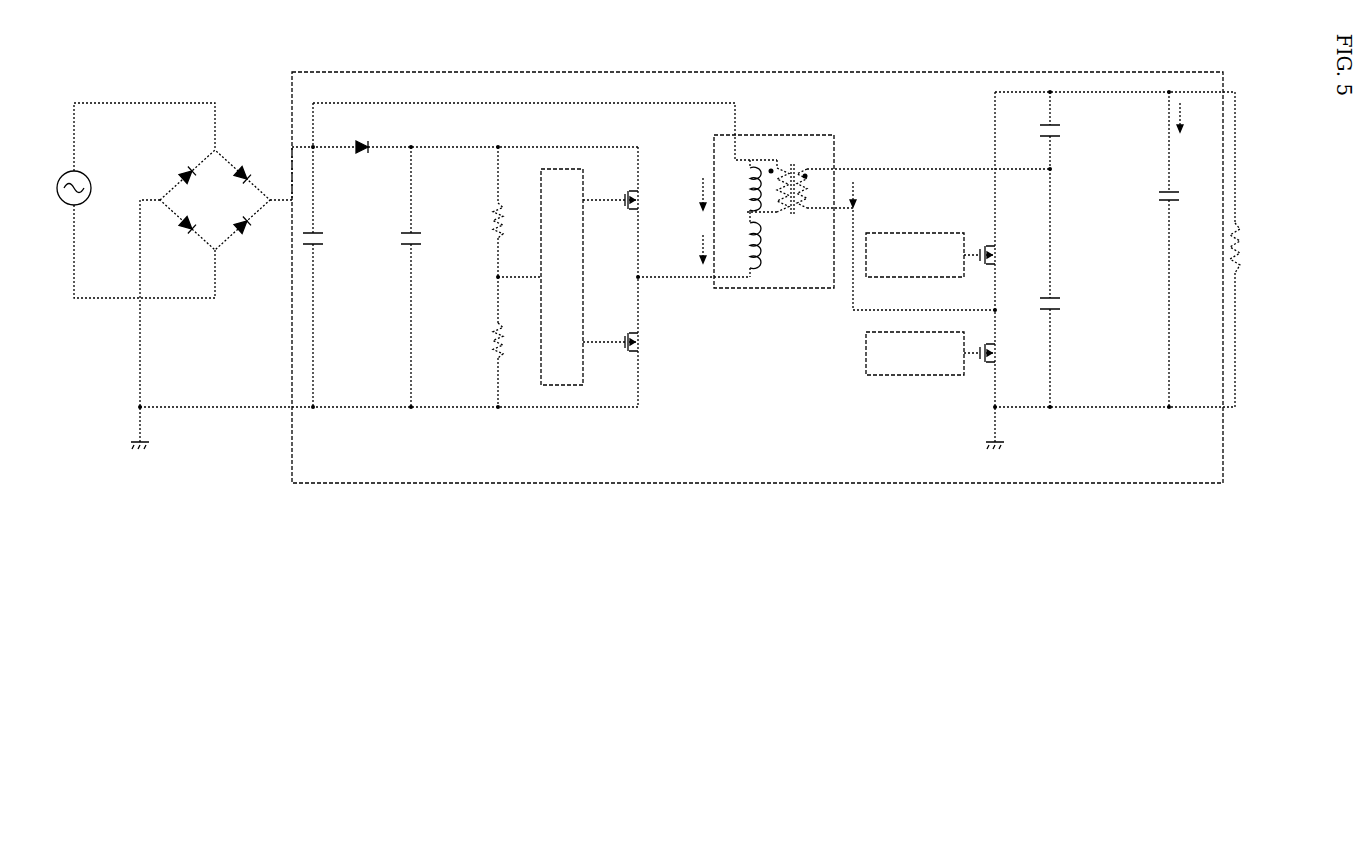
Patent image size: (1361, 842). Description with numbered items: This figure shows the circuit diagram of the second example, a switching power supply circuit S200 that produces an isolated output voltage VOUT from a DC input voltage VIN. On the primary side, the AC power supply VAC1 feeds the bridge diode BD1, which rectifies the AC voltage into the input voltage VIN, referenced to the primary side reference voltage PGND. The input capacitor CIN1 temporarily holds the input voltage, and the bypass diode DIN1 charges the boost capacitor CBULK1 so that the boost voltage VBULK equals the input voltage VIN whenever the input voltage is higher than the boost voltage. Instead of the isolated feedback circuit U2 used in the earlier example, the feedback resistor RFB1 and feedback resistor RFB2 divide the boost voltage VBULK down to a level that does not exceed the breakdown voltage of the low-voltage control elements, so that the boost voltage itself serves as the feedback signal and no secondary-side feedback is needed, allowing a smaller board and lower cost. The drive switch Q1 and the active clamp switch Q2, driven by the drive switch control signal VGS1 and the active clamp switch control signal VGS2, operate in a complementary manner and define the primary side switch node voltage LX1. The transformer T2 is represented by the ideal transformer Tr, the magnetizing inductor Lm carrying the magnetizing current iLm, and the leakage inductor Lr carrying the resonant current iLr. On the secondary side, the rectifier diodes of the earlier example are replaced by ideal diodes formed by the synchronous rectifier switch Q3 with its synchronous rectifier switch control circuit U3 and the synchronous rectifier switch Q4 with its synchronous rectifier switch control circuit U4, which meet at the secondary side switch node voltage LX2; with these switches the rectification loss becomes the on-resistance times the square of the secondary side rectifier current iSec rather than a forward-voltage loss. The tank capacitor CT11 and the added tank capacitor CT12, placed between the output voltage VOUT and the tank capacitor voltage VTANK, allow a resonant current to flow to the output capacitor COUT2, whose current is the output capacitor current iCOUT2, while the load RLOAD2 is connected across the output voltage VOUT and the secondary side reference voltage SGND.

The AC power supply VAC1 is at (87, 197).
The bridge diode BD1 is at (215, 205).
The primary side reference voltage PGND is at (153, 457).
The switching power supply circuit S200 is at (757, 266).
The input voltage VIN is at (545, 123).
The boost voltage VBULK is at (465, 138).
The bypass diode DIN1 is at (372, 156).
The input capacitor CIN1 is at (324, 255).
The boost capacitor CBULK1 is at (427, 277).
The feedback resistor RFB1 is at (512, 212).
The feedback resistor RFB2 is at (512, 342).
The feedback circuit U2 is at (562, 269).
The active clamp switch control signal VGS2 is at (604, 195).
The drive switch control signal VGS1 is at (604, 337).
The active clamp switch Q2 is at (641, 207).
The drive switch Q1 is at (641, 349).
The primary side switch node voltage LX1 is at (694, 269).
The magnetizing current iLm is at (697, 194).
The resonant current iLr is at (697, 249).
The transformer T2 is at (774, 219).
The magnetizing inductor Lm is at (742, 186).
The leakage inductor Lr is at (742, 244).
The ideal transformer Tr is at (788, 177).
The tank capacitor voltage VTANK is at (928, 160).
The secondary side rectifier current iSec is at (861, 194).
The secondary side switch node voltage LX2 is at (924, 302).
The synchronous rectifier switch control circuit U3 is at (915, 247).
The synchronous rectifier switch control circuit U4 is at (915, 345).
The synchronous rectifier switch Q3 is at (997, 261).
The synchronous rectifier switch Q4 is at (997, 359).
The secondary side reference voltage SGND is at (1009, 457).
The output voltage VOUT is at (1115, 84).
The tank capacitor CT12 is at (1061, 130).
The tank capacitor CT11 is at (1061, 288).
The output capacitor COUT2 is at (1185, 249).
The output capacitor current iCOUT2 is at (1189, 121).
The load RLOAD2 is at (1253, 249).